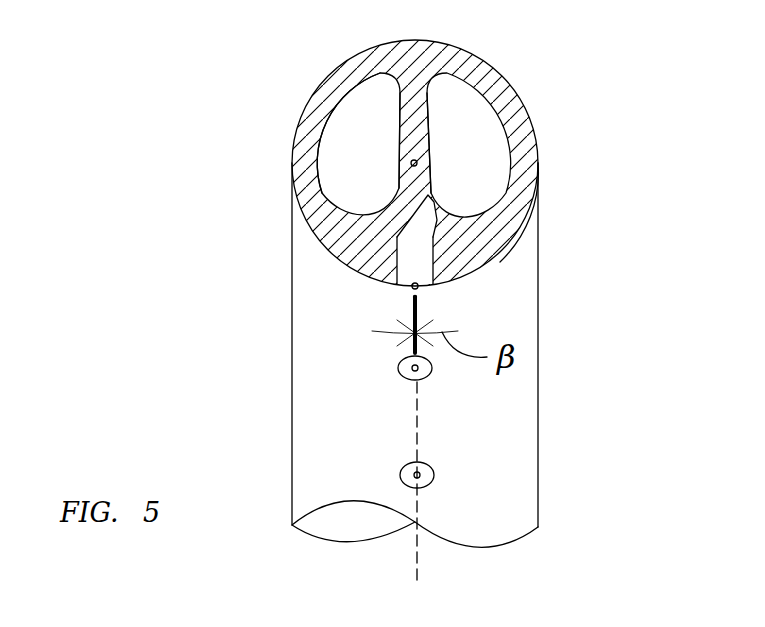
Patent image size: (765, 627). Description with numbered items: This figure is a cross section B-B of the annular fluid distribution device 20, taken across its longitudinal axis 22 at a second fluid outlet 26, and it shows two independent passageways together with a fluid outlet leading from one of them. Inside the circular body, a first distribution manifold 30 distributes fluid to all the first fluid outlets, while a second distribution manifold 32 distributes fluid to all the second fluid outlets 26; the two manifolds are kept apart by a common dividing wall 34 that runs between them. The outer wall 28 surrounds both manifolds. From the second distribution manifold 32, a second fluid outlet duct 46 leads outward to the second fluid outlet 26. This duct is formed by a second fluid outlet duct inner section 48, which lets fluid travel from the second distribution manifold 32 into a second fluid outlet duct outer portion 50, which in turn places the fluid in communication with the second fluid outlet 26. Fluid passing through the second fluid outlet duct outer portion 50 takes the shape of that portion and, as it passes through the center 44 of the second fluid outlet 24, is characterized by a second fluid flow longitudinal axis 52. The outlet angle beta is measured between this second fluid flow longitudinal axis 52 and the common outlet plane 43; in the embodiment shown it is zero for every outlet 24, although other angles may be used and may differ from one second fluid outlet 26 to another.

The annular fluid distribution device 20 is at (448, 50).
The longitudinal axis 22 is at (428, 158).
The second fluid outlet 24 is at (433, 372).
The second fluid outlet 26 is at (430, 288).
The outer wall 28 is at (522, 227).
The first distribution manifold 30 is at (373, 112).
The second distribution manifold 32 is at (457, 110).
The common dividing wall 34 is at (399, 143).
The common outlet plane 43 is at (418, 560).
The center of the second fluid outlet 44 is at (408, 288).
The second fluid outlet duct 46 is at (442, 242).
The second fluid outlet duct inner section 48 is at (427, 218).
The second fluid outlet duct outer portion 50 is at (417, 265).
The second fluid flow longitudinal axis 52 is at (408, 309).